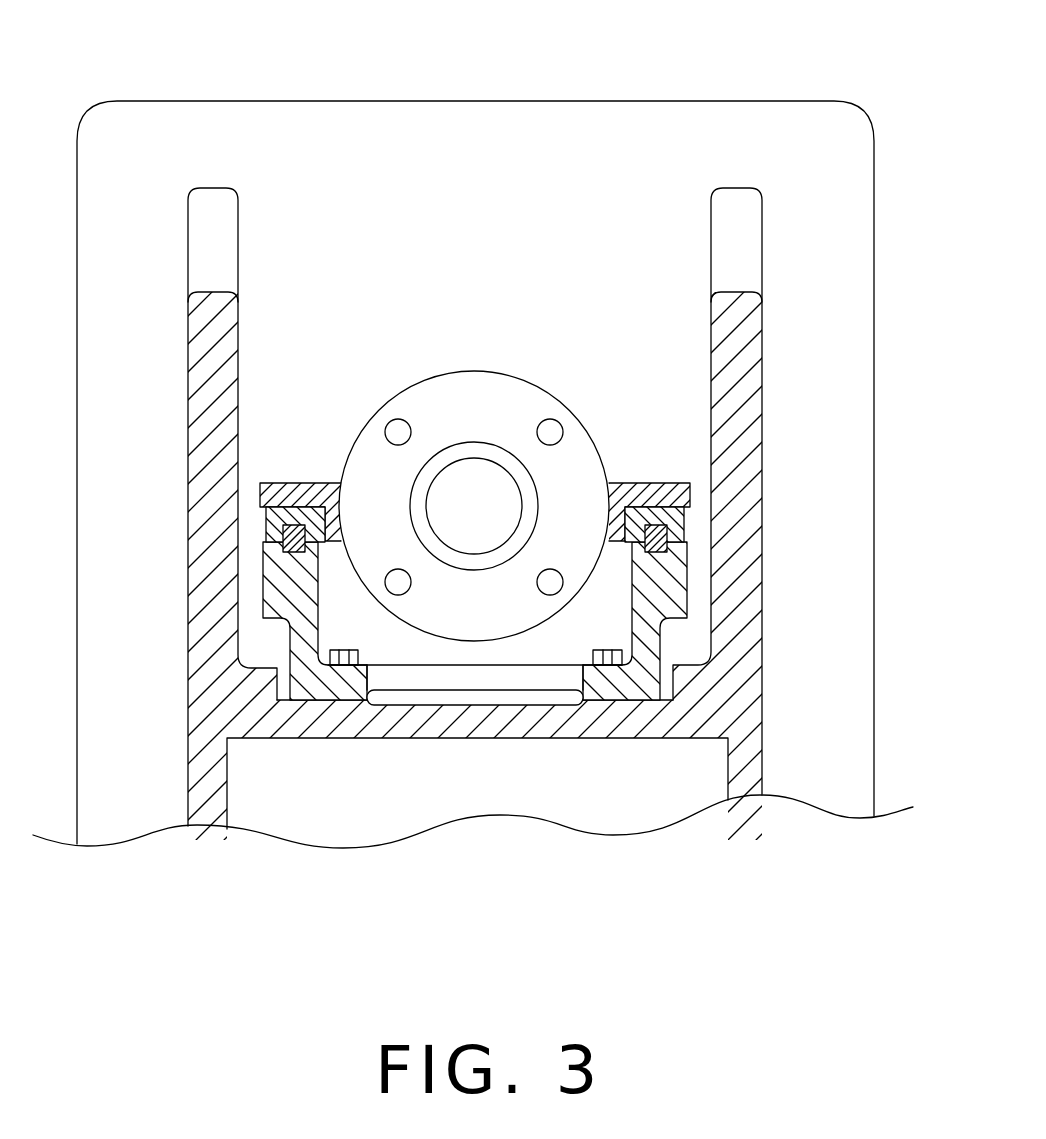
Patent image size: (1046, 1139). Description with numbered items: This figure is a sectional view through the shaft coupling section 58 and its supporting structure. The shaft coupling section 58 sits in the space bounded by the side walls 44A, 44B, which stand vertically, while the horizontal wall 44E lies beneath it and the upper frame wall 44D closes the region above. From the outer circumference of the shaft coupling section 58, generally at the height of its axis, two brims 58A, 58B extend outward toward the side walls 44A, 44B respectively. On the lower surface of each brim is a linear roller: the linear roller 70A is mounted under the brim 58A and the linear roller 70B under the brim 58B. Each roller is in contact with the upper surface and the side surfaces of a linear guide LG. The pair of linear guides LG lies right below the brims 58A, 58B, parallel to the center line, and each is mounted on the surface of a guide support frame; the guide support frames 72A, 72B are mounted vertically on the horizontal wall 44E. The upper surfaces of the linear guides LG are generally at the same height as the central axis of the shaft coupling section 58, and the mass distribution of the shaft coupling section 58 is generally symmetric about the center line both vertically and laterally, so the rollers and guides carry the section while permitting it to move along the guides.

The upper frame wall 44D is at (610, 101).
The side wall 44A is at (200, 390).
The side wall 44B is at (752, 395).
The horizontal wall 44E is at (373, 728).
The shaft coupling section 58 is at (469, 371).
The brim 58A is at (288, 497).
The brim 58B is at (661, 497).
The linear roller 70A is at (268, 520).
The linear roller 70B is at (685, 512).
The guide support frame 72A is at (282, 573).
The guide support frame 72B is at (675, 587).
The linear guide LG is at (287, 530).